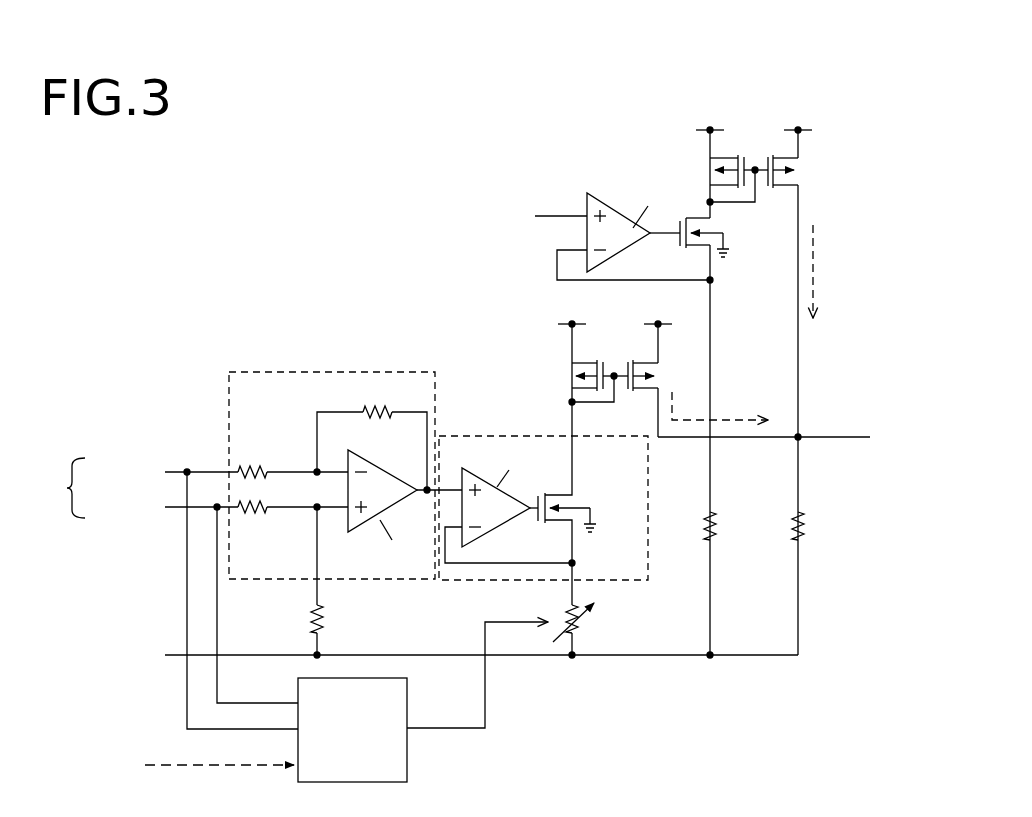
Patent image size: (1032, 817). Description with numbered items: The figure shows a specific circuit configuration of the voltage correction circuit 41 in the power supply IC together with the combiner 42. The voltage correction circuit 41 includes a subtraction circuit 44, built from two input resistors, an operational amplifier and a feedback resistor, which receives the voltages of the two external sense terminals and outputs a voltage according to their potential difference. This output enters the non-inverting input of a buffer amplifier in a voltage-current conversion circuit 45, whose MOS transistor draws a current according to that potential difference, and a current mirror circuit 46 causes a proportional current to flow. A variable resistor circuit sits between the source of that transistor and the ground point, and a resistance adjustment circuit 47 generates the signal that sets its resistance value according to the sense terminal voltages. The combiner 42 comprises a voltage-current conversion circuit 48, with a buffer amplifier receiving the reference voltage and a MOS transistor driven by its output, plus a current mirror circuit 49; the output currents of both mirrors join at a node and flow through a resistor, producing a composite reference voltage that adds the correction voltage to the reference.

The voltage correction circuit 41 is at (350, 207).
The combiner 42 is at (863, 374).
The subtraction circuit 44 is at (292, 370).
The voltage-current conversion circuit 45 is at (490, 436).
The current mirror circuit 46 is at (567, 340).
The resistance adjustment circuit 47 is at (410, 757).
The voltage-current conversion circuit 48 is at (707, 172).
The current mirror circuit 49 is at (812, 140).